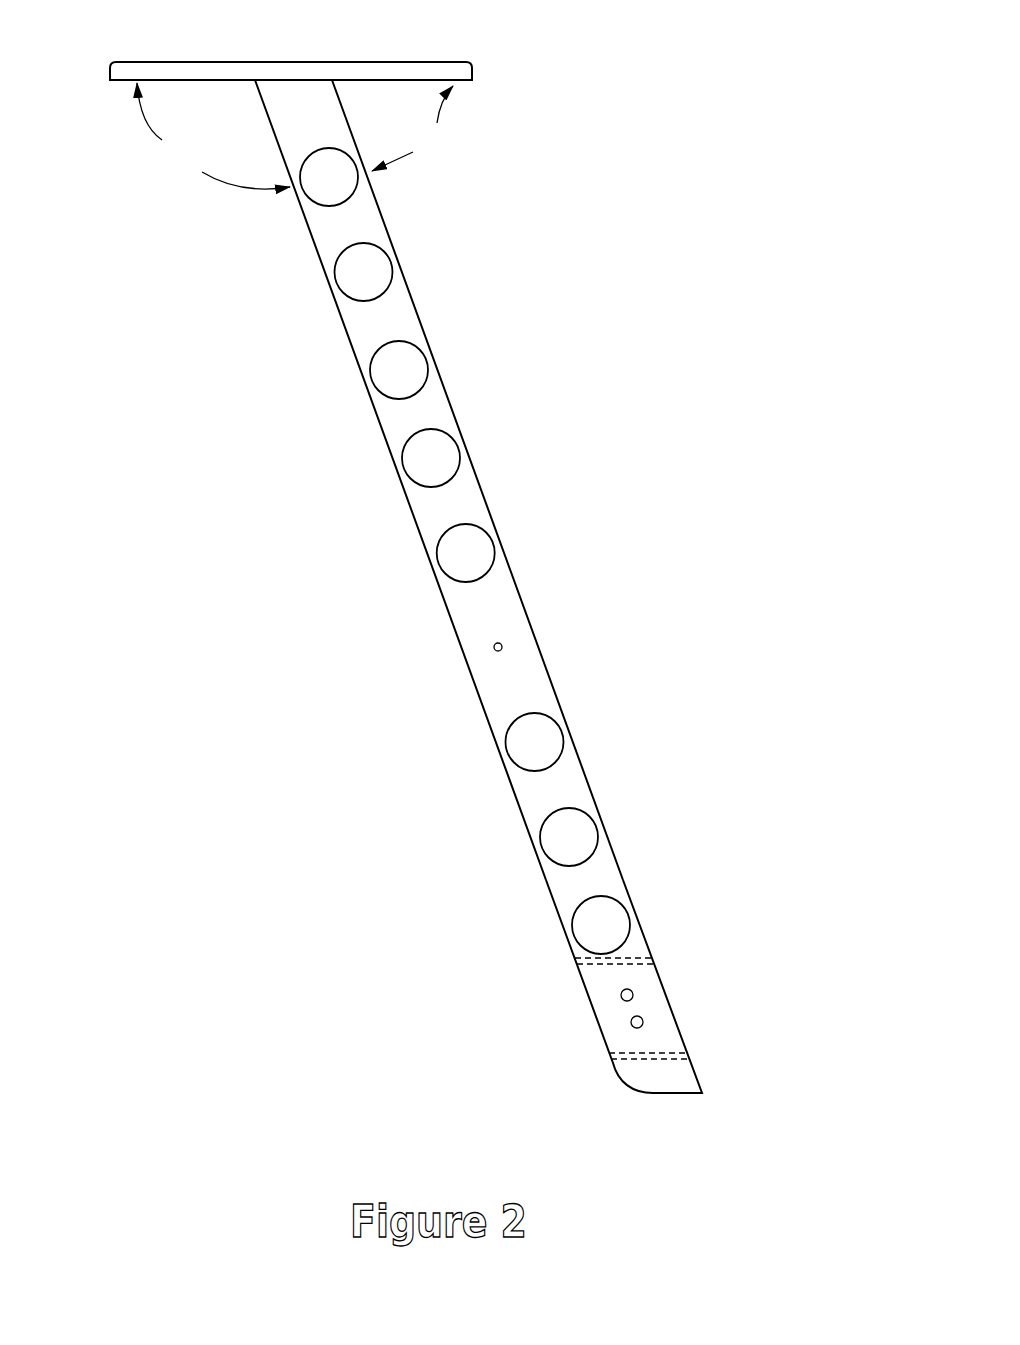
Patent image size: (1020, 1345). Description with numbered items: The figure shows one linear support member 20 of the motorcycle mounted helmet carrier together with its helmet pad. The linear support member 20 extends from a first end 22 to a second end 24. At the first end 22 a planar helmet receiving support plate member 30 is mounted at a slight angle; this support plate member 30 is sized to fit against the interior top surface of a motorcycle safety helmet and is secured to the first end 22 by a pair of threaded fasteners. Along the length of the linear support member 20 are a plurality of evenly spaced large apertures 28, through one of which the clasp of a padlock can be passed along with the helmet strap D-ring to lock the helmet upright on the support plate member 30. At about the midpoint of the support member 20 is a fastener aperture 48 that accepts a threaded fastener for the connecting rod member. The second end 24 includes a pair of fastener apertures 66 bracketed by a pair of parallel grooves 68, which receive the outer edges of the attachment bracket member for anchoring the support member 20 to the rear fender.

The linear support member 20 is at (345, 645).
The first end 22 is at (303, 125).
The second end 24 is at (573, 887).
The large aperture 28 is at (415, 362).
The helmet receiving support plate member 30 is at (403, 62).
The fastener aperture 48 is at (503, 645).
The fastener apertures 66 is at (645, 1020).
The parallel grooves 68 is at (657, 960).